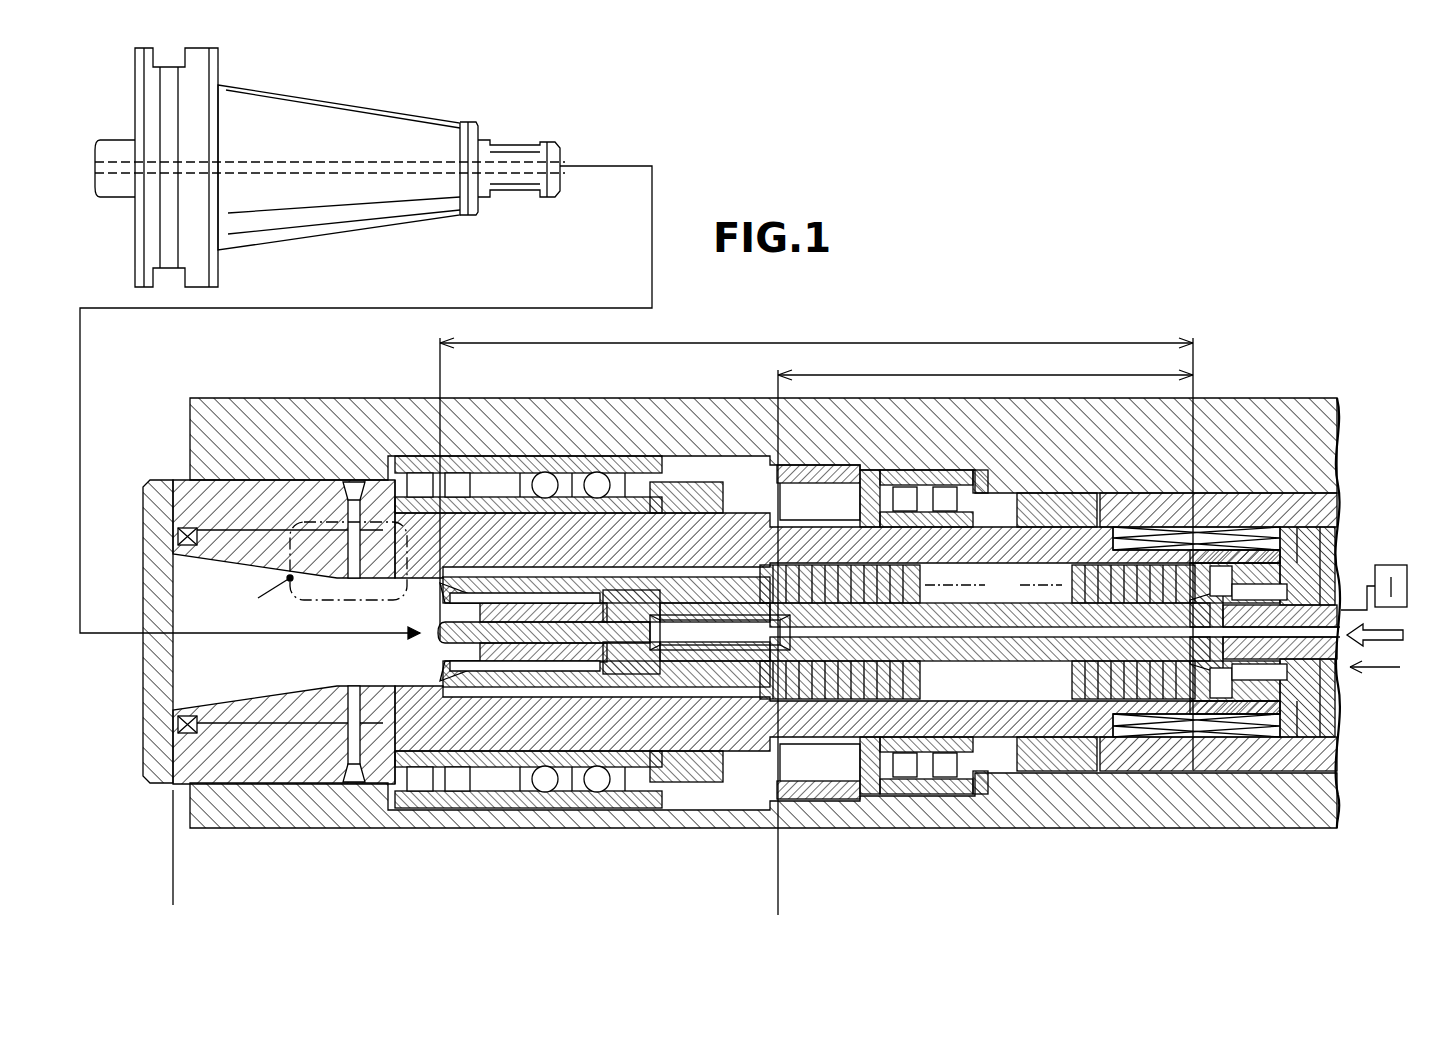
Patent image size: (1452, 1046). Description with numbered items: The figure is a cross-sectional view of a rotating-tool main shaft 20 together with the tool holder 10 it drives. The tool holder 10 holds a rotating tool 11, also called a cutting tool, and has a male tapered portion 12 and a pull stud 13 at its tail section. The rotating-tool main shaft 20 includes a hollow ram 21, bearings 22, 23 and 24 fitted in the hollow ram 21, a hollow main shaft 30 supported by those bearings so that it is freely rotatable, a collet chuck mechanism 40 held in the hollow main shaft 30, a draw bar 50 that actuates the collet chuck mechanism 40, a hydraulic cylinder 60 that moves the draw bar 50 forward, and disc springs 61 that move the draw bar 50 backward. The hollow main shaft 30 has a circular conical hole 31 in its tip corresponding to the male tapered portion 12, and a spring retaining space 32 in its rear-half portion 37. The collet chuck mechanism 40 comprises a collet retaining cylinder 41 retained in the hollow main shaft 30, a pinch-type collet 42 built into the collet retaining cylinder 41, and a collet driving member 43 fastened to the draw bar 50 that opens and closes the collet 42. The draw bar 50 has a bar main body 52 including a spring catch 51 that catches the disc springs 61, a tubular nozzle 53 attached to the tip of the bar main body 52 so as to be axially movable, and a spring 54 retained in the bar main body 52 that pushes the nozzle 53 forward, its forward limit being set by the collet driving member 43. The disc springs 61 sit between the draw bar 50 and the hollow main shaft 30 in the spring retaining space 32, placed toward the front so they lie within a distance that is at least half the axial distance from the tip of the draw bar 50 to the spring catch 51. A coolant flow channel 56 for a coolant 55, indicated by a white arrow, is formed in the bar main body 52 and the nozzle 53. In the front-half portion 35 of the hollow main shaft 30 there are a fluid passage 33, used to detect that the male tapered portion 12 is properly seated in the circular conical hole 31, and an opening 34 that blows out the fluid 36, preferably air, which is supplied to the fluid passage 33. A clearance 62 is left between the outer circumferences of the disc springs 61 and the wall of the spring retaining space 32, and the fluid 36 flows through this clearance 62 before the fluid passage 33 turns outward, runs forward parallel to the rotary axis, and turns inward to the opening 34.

The tool holder 10 is at (318, 166).
The rotating tool 11 is at (121, 150).
The male tapered portion 12 is at (328, 126).
The pull stud 13 is at (510, 186).
The rotating-tool main shaft 20 is at (784, 617).
The hollow ram 21 is at (716, 432).
The bearing 22 is at (428, 462).
The bearing 23 is at (586, 462).
The bearing 24 is at (925, 476).
The hollow main shaft 30 is at (275, 507).
The circular conical hole 31 is at (228, 705).
The spring retaining space 32 is at (968, 580).
The fluid passage 33 is at (734, 609).
The opening 34 is at (330, 560).
The front-half portion 35 is at (778, 905).
The fluid 36 is at (1382, 670).
The rear-half portion 37 is at (778, 905).
The collet chuck mechanism 40 is at (606, 744).
The collet retaining cylinder 41 is at (563, 690).
The collet 42 is at (492, 686).
The collet driving member 43 is at (630, 680).
The draw bar 50 is at (1055, 724).
The spring catch 51 is at (1195, 702).
The bar main body 52 is at (1052, 652).
The nozzle 53 is at (425, 642).
The spring 54 is at (725, 645).
The coolant 55 is at (1380, 642).
The coolant flow channel 56 is at (383, 176).
The hydraulic cylinder 60 is at (1390, 565).
The disc springs 61 is at (852, 692).
The clearance 62 is at (1052, 577).